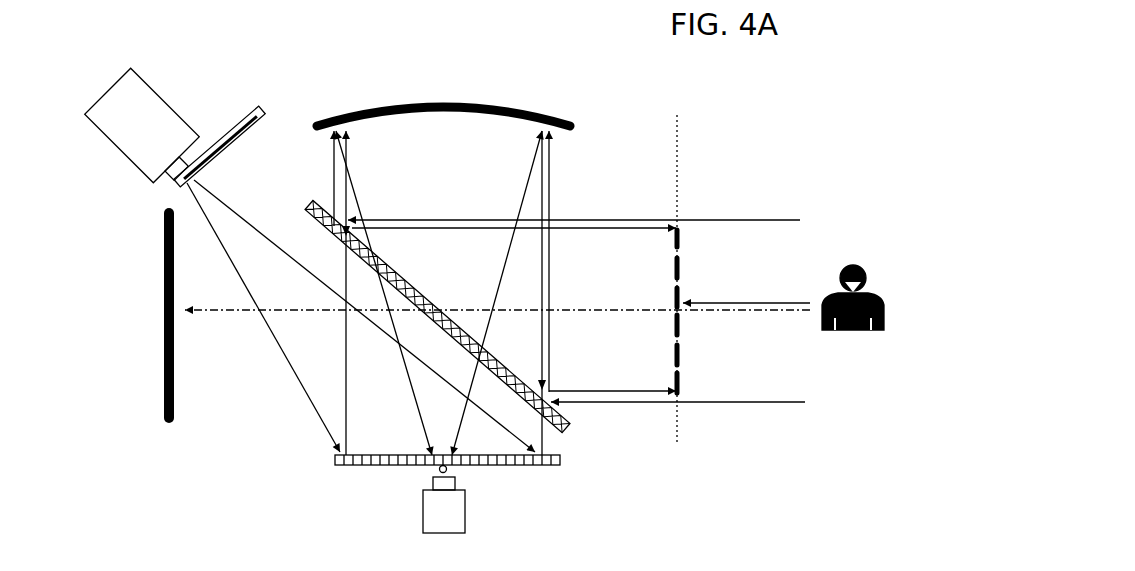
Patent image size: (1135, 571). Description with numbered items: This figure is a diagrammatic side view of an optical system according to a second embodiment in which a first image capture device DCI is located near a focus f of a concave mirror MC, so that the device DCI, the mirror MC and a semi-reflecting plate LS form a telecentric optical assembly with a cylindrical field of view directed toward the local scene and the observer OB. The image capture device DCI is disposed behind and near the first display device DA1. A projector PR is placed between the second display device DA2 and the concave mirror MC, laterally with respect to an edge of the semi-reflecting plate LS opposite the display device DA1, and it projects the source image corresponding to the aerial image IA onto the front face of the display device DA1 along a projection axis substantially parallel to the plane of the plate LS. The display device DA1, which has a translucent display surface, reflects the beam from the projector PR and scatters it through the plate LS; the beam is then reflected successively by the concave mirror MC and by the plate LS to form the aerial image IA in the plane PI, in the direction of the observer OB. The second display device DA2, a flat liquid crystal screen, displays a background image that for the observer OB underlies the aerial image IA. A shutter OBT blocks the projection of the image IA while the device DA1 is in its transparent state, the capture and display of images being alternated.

The projector PR is at (145, 77).
The shutter OBT is at (249, 110).
The semi-reflecting plate LS is at (316, 198).
The concave mirror MC is at (543, 112).
The plane PI is at (678, 158).
The aerial image IA is at (680, 268).
The observer OB is at (853, 311).
The second display device DA2 is at (165, 372).
The first display device DA1 is at (344, 467).
The focus f is at (452, 470).
The first image capture device DCI is at (444, 533).